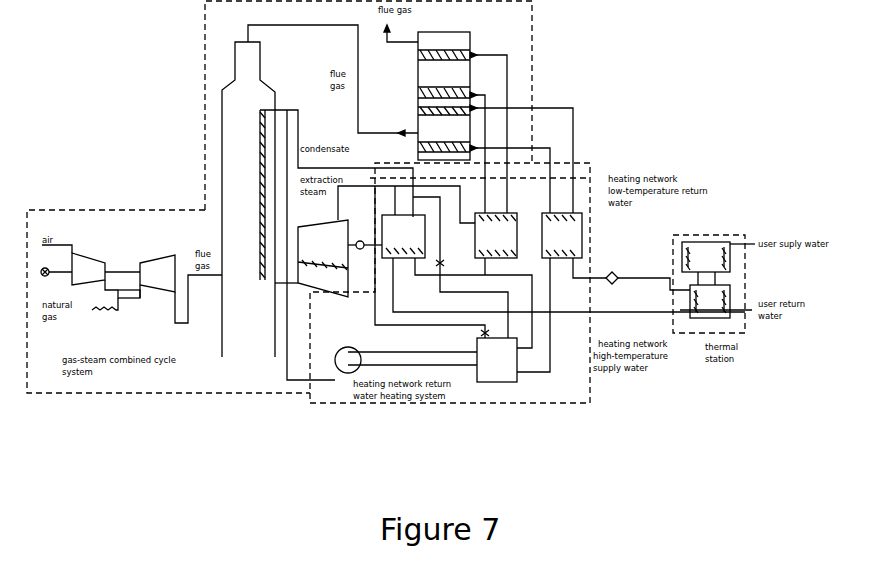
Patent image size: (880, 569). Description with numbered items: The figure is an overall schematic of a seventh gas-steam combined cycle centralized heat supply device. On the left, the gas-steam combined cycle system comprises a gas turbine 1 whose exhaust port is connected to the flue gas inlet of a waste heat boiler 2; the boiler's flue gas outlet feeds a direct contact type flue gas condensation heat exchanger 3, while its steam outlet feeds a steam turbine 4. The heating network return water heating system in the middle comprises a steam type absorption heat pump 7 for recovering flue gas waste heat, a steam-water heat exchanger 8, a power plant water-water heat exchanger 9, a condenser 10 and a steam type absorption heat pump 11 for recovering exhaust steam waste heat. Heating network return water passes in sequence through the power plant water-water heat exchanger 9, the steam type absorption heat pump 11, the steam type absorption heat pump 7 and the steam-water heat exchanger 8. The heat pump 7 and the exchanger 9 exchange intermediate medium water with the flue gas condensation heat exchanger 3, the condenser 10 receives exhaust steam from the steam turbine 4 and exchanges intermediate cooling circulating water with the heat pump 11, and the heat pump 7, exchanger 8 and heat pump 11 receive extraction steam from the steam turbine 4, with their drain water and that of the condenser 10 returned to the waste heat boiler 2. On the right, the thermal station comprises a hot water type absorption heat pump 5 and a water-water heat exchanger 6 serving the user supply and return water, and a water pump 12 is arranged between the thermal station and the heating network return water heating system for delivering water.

The gas turbine 1 is at (137, 267).
The waste heat boiler 2 is at (320, 202).
The direct contact type flue gas condensation heat exchanger 3 is at (478, 119).
The steam turbine 4 is at (391, 262).
The hot water type absorption heat pump 5 is at (716, 295).
The water-water heat exchanger 6 is at (718, 257).
The steam type absorption heat pump for recovering flue gas waste heat 7 is at (496, 244).
The steam-water heat exchanger 8 is at (563, 267).
The power plant water-water heat exchanger 9 is at (561, 292).
The condenser 10 is at (348, 370).
The steam type absorption heat pump for recovering exhaust steam waste heat 11 is at (497, 356).
The water pump 12 is at (614, 272).